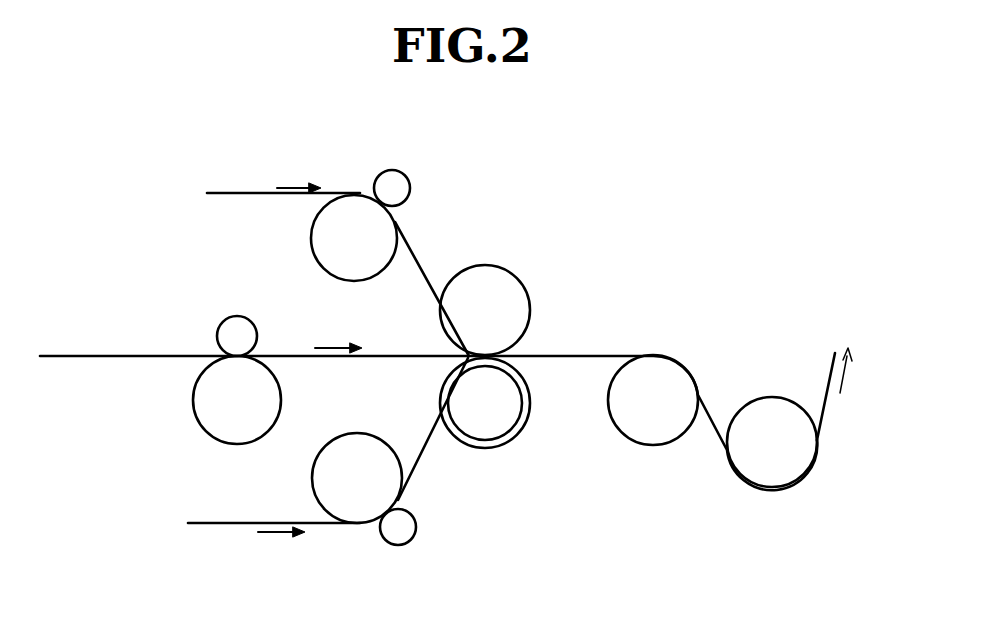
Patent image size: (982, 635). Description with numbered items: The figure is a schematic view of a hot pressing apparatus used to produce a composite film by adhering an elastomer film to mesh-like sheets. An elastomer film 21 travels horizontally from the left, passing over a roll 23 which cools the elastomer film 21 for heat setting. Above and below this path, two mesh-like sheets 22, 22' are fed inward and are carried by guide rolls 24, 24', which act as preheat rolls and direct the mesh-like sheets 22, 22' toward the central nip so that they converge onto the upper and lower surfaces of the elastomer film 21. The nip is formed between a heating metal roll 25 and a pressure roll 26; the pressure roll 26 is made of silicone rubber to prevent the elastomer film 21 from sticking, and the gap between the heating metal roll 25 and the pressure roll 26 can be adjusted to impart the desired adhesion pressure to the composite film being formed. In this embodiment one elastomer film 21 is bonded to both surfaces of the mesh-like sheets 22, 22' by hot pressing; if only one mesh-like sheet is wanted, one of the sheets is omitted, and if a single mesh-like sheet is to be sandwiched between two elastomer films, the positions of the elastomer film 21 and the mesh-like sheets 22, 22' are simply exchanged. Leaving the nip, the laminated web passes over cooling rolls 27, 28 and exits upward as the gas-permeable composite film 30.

The elastomer film 21 is at (113, 355).
The mesh-like sheet 22 is at (280, 166).
The mesh-like sheet 22' is at (274, 567).
The roll 23 is at (193, 410).
The guide roll (preheat roll) 24 is at (362, 263).
The guide roll (preheat roll) 24' is at (360, 451).
The heating metal roll 25 is at (508, 437).
The pressure roll 26 is at (528, 297).
The cooling roll 27 is at (668, 443).
The cooling roll 28 is at (780, 397).
The gas-permeable composite film 30 is at (825, 410).